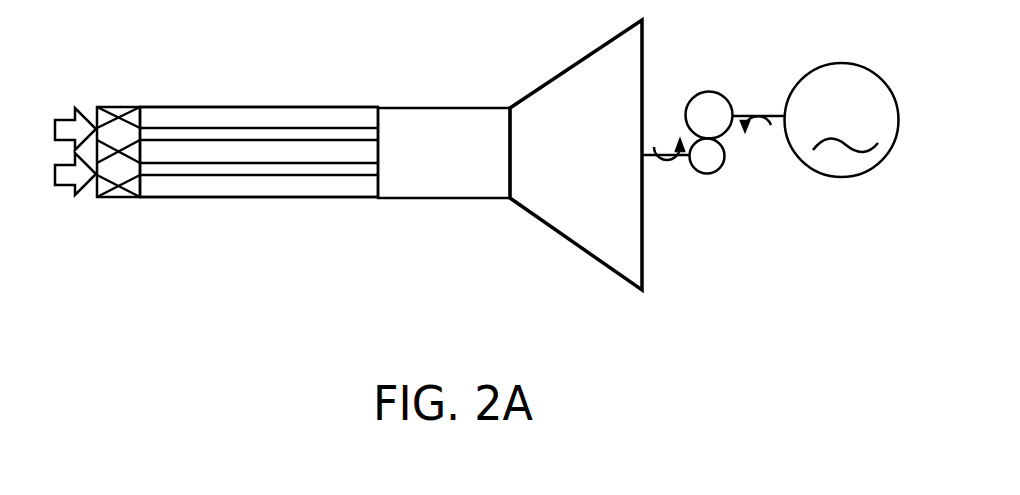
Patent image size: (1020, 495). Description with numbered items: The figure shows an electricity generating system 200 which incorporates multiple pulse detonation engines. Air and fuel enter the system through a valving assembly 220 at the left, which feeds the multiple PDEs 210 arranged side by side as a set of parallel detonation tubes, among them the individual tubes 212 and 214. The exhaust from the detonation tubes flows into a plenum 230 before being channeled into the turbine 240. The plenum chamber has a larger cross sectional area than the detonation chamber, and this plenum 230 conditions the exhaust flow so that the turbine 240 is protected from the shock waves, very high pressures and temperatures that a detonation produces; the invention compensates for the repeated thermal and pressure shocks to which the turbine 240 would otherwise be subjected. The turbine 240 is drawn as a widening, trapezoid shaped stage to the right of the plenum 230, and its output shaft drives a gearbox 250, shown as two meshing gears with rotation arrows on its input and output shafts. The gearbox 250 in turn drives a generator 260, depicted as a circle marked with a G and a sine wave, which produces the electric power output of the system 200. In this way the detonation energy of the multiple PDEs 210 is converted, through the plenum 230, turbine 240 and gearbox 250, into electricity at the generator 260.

The pulse detonation engine power system 200 is at (391, 335).
The multiple pulse detonation engines (PDEs) 210 is at (259, 147).
The pulse detonation engine tube 212 is at (245, 163).
The pulse detonation engine tube 214 is at (223, 107).
The valving assembly 220 is at (120, 197).
The plenum 230 is at (470, 198).
The turbine 240 is at (598, 262).
The gearbox 250 is at (717, 172).
The generator 260 is at (860, 175).